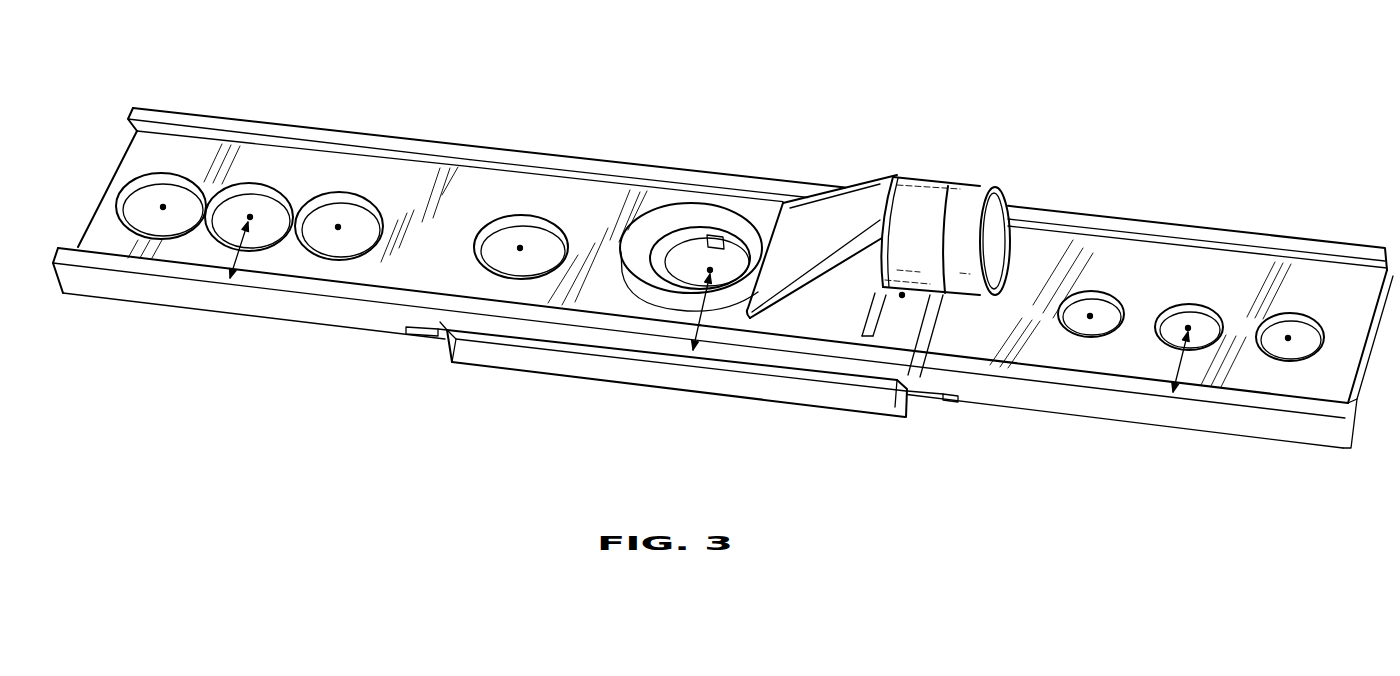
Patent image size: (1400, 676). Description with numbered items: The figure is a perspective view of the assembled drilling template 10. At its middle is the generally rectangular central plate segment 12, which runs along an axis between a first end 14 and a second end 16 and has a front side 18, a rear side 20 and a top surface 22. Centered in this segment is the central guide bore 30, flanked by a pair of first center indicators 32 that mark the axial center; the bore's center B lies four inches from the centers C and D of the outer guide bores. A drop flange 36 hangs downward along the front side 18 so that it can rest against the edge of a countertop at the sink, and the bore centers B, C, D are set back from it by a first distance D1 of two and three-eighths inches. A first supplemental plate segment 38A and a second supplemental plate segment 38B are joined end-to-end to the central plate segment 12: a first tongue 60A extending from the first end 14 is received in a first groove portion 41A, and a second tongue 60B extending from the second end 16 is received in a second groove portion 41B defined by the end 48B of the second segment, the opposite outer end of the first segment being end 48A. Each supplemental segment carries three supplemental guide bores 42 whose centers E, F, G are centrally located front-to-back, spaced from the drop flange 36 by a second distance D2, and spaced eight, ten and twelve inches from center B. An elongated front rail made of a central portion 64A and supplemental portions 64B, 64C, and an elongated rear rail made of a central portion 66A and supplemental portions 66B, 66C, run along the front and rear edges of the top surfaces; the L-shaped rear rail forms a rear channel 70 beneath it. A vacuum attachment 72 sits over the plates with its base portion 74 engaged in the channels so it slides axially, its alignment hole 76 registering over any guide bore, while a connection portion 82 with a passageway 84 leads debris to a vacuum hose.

The template 10 is at (1040, 115).
The central plate segment 12 is at (683, 160).
The first end 14 is at (462, 278).
The second end 16 is at (935, 372).
The front side 18 is at (467, 368).
The rear side 20 is at (573, 153).
The top surface 22 is at (610, 190).
The central guide bore 30 is at (694, 235).
The first center indicators 32 is at (710, 233).
The drop flange 36 is at (827, 398).
The first supplemental plate segment 38A is at (281, 325).
The second supplemental plate segment 38B is at (1215, 442).
The first groove portion 41A is at (423, 337).
The second groove portion 41B is at (915, 418).
The supplemental guide bores 42 is at (330, 200).
The first end of first supplemental plate segment 48A is at (83, 228).
The first end of second supplemental plate segment 48B is at (1357, 412).
The first tongue 60A is at (415, 338).
The second tongue 60B is at (948, 398).
The central portion of front rail 64A is at (587, 318).
The supplemental portion of front rail 64B is at (347, 287).
The supplemental portion of front rail 64C is at (1012, 374).
The central portion of rear rail 66A is at (722, 175).
The supplemental portion of rear rail 66B is at (335, 137).
The supplemental portion of rear rail 66C is at (1315, 247).
The rear channel 70 is at (142, 129).
The vacuum attachment 72 is at (933, 175).
The base portion 74 is at (723, 243).
The alignment hole 76 is at (645, 302).
The connection portion 82 is at (972, 203).
The passageway 84 is at (1003, 225).
The center of central guide bore B is at (710, 272).
The center of outer guide bore C is at (520, 250).
The center of outer guide bore D is at (902, 297).
The first distance D1 is at (697, 378).
The second distance D2 is at (231, 283).
The center of supplemental guide bore E is at (338, 229).
The center of supplemental guide bore F is at (250, 220).
The center of supplemental guide bore G is at (163, 210).